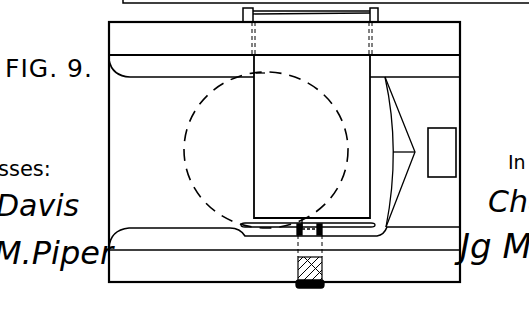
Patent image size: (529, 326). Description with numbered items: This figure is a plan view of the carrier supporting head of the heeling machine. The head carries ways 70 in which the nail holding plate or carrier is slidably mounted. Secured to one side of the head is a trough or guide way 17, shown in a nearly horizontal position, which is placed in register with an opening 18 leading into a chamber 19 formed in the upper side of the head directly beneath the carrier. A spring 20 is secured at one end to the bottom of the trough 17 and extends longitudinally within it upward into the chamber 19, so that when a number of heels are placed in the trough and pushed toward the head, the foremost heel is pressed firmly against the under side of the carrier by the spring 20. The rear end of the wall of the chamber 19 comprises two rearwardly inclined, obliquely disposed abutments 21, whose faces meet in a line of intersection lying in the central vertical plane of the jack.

The ways 70 is at (173, 68).
The trough or guide way 17 is at (378, 14).
The opening 18 is at (373, 65).
The chamber 19 is at (266, 150).
The spring 20 is at (358, 108).
The abutments 21 is at (399, 126).